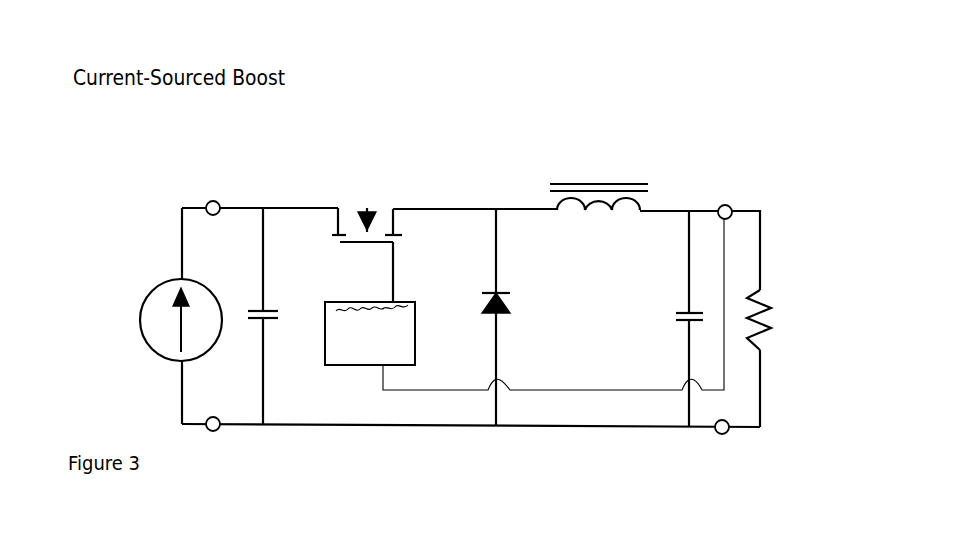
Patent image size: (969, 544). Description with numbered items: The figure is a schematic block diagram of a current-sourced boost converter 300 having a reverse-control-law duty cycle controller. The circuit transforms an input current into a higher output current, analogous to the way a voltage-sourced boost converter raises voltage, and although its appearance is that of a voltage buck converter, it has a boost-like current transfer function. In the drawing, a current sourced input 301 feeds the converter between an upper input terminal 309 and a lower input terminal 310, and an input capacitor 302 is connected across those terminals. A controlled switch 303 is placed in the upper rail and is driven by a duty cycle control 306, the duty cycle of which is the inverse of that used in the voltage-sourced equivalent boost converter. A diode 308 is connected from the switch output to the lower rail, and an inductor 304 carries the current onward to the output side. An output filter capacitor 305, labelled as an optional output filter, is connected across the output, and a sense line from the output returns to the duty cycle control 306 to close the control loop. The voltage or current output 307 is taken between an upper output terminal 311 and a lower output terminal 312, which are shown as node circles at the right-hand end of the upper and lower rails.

The current-sourced boost converter 300 is at (128, 230).
The current sourced input 301 is at (149, 262).
The input capacitor 302 is at (300, 306).
The switch (MOSFET) 303 is at (368, 204).
The inductor 304 is at (606, 181).
The output filter capacitor 305 is at (662, 320).
The duty cycle control 306 is at (414, 308).
The voltage or current output load 307 is at (772, 314).
The diode 308 is at (504, 311).
The input terminal 309 is at (216, 201).
The input terminal 310 is at (214, 432).
The output terminal 311 is at (727, 205).
The output terminal 312 is at (722, 435).